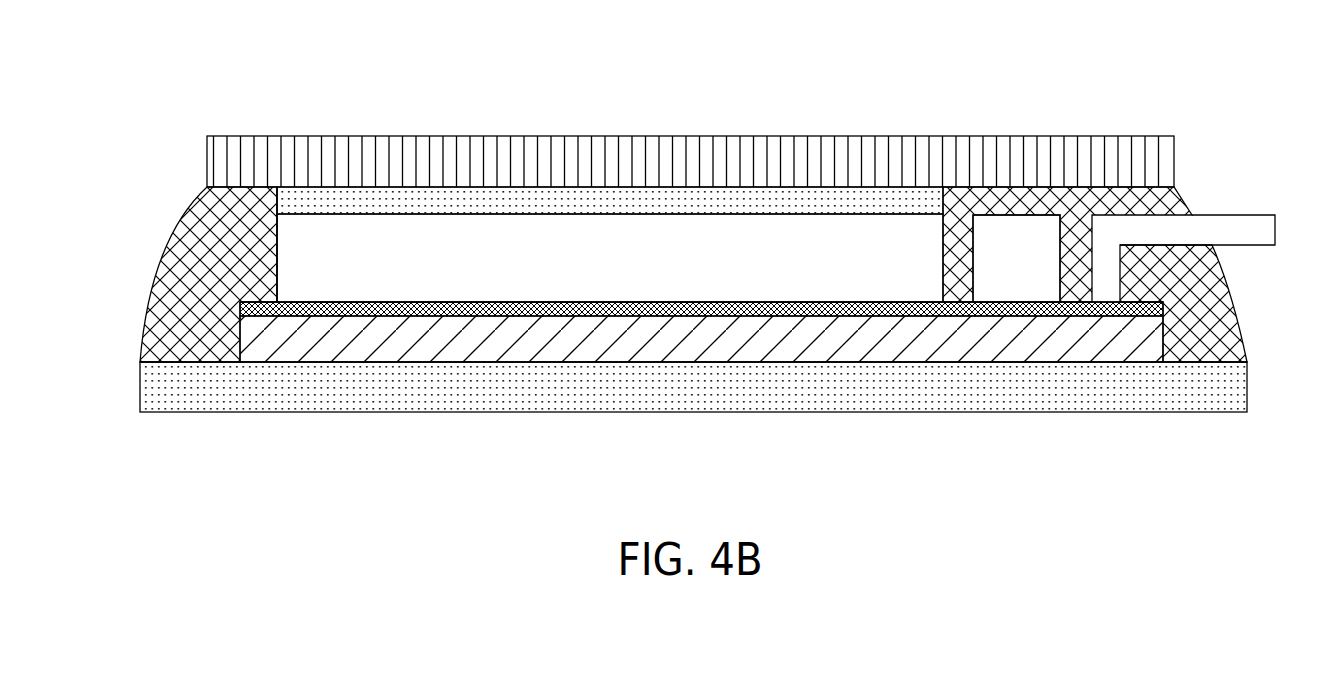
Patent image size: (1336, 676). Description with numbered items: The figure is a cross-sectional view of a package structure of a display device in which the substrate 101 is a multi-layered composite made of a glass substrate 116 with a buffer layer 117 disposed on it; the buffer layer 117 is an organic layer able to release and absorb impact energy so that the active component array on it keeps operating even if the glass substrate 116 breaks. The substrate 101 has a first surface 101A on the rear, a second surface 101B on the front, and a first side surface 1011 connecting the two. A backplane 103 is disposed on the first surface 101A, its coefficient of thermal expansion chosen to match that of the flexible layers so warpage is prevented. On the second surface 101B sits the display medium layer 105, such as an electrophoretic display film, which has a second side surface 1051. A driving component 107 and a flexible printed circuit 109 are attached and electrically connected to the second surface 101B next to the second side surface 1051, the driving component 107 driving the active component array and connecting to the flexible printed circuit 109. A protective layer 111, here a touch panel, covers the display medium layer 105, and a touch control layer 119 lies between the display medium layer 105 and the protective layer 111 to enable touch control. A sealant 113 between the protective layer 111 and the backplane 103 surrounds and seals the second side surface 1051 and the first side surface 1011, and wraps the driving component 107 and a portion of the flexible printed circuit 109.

The substrate 101 is at (701, 373).
The first surface 101A is at (393, 363).
The second surface 101B is at (393, 302).
The first side surface 1011 is at (240, 334).
The backplane 103 is at (1213, 388).
The display medium layer 105 is at (573, 240).
The second side surface 1051 is at (277, 242).
The driving component 107 is at (1017, 240).
The flexible printed circuit 109 is at (1247, 227).
The protective layer 111 is at (730, 150).
The sealant 113 is at (173, 243).
The glass substrate 116 is at (742, 350).
The buffer layer 117 is at (673, 317).
The touch control layer 119 is at (450, 198).